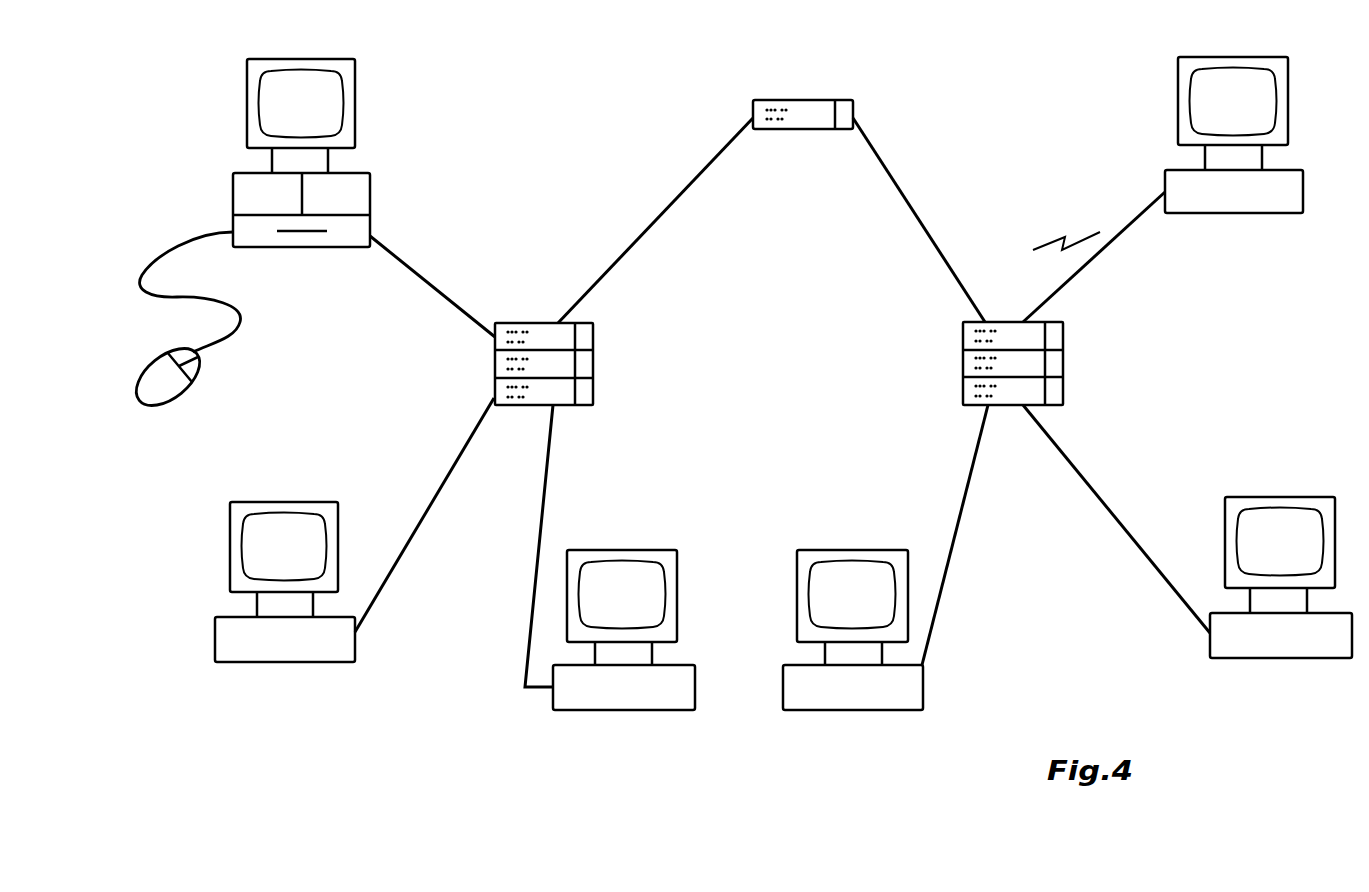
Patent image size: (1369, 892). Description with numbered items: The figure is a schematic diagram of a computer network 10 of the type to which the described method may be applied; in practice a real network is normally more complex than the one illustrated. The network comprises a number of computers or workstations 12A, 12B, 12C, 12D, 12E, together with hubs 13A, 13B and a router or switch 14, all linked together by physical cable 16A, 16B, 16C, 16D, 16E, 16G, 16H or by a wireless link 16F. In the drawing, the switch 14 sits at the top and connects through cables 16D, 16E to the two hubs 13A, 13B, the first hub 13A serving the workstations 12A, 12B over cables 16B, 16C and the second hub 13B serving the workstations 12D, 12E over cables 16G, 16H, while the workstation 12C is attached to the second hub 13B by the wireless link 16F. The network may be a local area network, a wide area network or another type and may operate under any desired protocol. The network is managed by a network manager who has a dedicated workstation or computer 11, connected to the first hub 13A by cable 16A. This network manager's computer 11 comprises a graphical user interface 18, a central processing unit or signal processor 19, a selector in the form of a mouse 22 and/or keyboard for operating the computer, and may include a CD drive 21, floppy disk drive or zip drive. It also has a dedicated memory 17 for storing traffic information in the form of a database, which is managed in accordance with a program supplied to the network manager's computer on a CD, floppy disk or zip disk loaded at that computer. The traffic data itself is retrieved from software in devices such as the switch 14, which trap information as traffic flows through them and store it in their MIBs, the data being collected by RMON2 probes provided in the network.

The network system 10 is at (1001, 78).
The network manager's computer 11 is at (284, 247).
The workstation 12A is at (312, 674).
The workstation 12B is at (652, 719).
The workstation 12C is at (1272, 232).
The workstation 12D is at (877, 719).
The workstation 12E is at (1315, 672).
The hub 13A is at (633, 361).
The hub 13B is at (1096, 365).
The switch 14 is at (817, 100).
The physical cable 16A is at (437, 282).
The physical cable 16B is at (450, 467).
The physical cable 16C is at (548, 465).
The physical cable 16D is at (653, 218).
The physical cable 16E is at (918, 212).
The wireless link 16F is at (1100, 252).
The physical cable 16G is at (960, 510).
The physical cable 16H is at (1093, 482).
The dedicated memory 17 is at (352, 193).
The graphical user interface 18 is at (347, 79).
The central processing unit 19 is at (250, 194).
The CD drive 21 is at (350, 237).
The mouse 22 is at (168, 392).